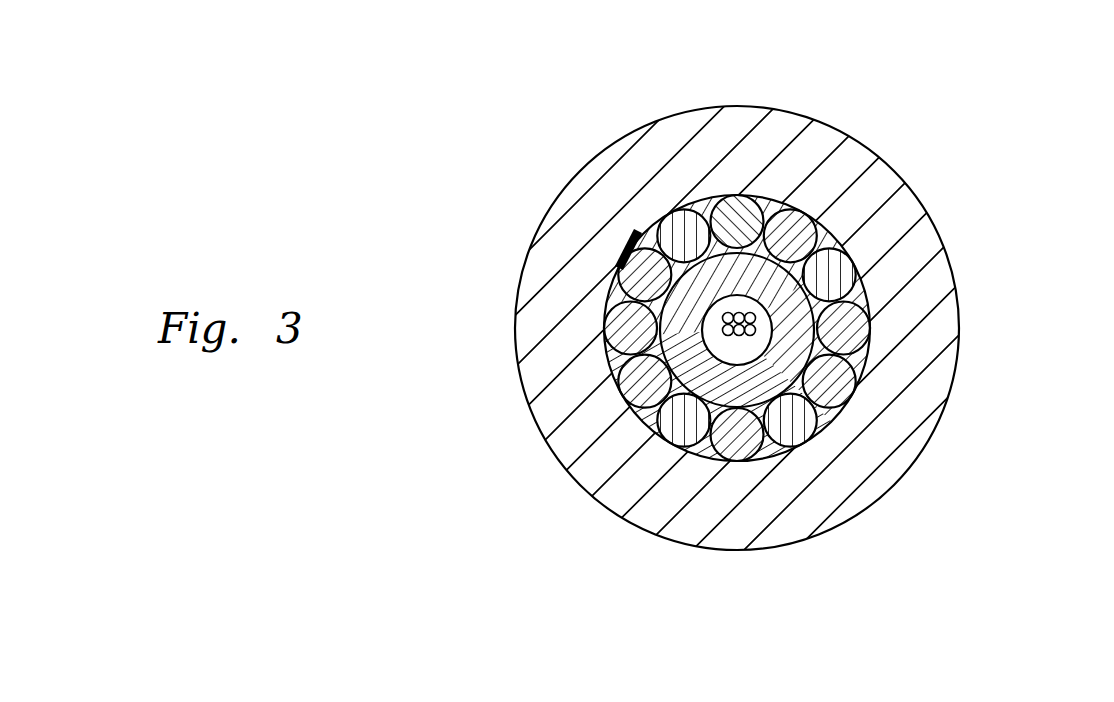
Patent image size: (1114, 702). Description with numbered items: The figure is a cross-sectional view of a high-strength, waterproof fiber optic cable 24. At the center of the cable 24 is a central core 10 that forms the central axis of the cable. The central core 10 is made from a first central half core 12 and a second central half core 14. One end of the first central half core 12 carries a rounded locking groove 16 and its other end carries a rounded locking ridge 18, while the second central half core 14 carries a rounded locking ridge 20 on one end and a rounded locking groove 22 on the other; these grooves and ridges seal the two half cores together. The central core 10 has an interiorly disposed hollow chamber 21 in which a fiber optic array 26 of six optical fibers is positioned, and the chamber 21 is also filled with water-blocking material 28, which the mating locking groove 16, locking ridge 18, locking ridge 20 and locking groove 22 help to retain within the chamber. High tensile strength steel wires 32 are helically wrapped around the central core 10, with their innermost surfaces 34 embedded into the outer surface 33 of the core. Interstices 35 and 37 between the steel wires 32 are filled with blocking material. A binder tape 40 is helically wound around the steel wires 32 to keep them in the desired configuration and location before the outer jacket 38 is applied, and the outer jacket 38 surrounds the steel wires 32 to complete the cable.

The central core 10 is at (743, 240).
The first central half core 12 is at (820, 227).
The second central half core 14 is at (647, 420).
The rounded locking groove 16 is at (663, 312).
The rounded locking ridge 18 is at (800, 328).
The rounded locking ridge 20 is at (607, 330).
The hollow chamber 21 is at (755, 364).
The rounded locking groove 22 is at (855, 387).
The fiber optic cable 24 is at (962, 128).
The fiber optic array 26 is at (803, 290).
The water-blocking material 28 is at (718, 352).
The high tensile strength steel wires 32 is at (734, 438).
The outer surface 33 is at (803, 447).
The innermost surfaces 34 is at (792, 440).
The interstices 35 is at (698, 250).
The interstices 37 is at (708, 207).
The outer jacket 38 is at (613, 513).
The binder tape 40 is at (623, 243).